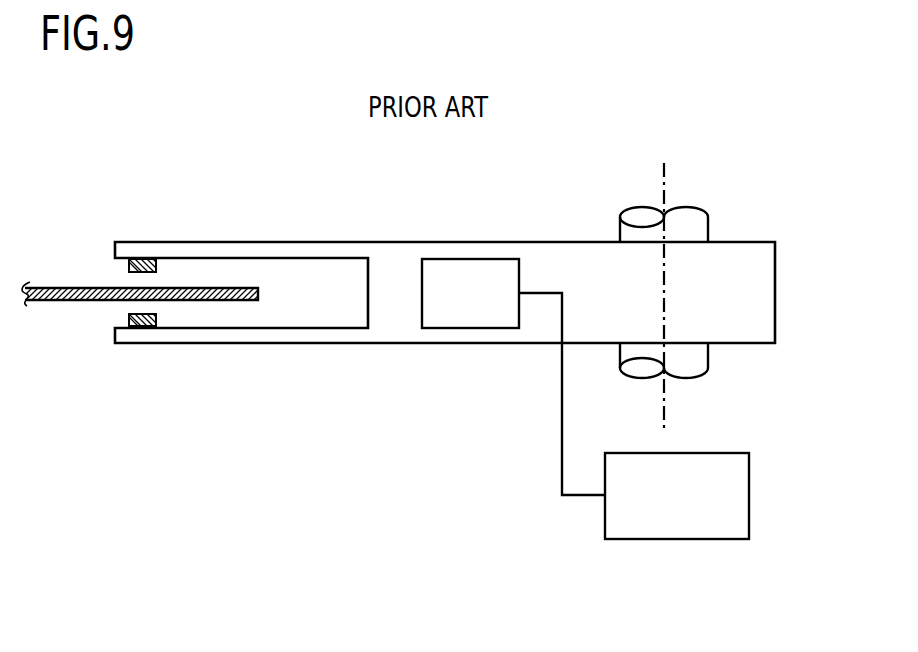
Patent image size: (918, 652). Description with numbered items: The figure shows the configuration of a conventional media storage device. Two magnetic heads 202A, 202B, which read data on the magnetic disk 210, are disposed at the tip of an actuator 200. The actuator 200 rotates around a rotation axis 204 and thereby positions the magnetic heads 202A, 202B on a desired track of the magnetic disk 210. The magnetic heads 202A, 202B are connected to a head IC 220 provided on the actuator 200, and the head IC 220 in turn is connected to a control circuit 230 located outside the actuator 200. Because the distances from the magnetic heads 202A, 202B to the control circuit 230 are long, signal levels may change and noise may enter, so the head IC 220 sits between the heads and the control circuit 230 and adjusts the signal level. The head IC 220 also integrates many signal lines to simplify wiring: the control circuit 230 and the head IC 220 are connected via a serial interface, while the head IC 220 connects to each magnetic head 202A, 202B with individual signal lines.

The actuator 200 is at (345, 252).
The magnetic head 202A is at (128, 268).
The magnetic head 202B is at (115, 318).
The rotation axis 204 is at (692, 220).
The magnetic disk 210 is at (45, 302).
The head IC 220 is at (438, 320).
The control circuit 230 is at (638, 527).